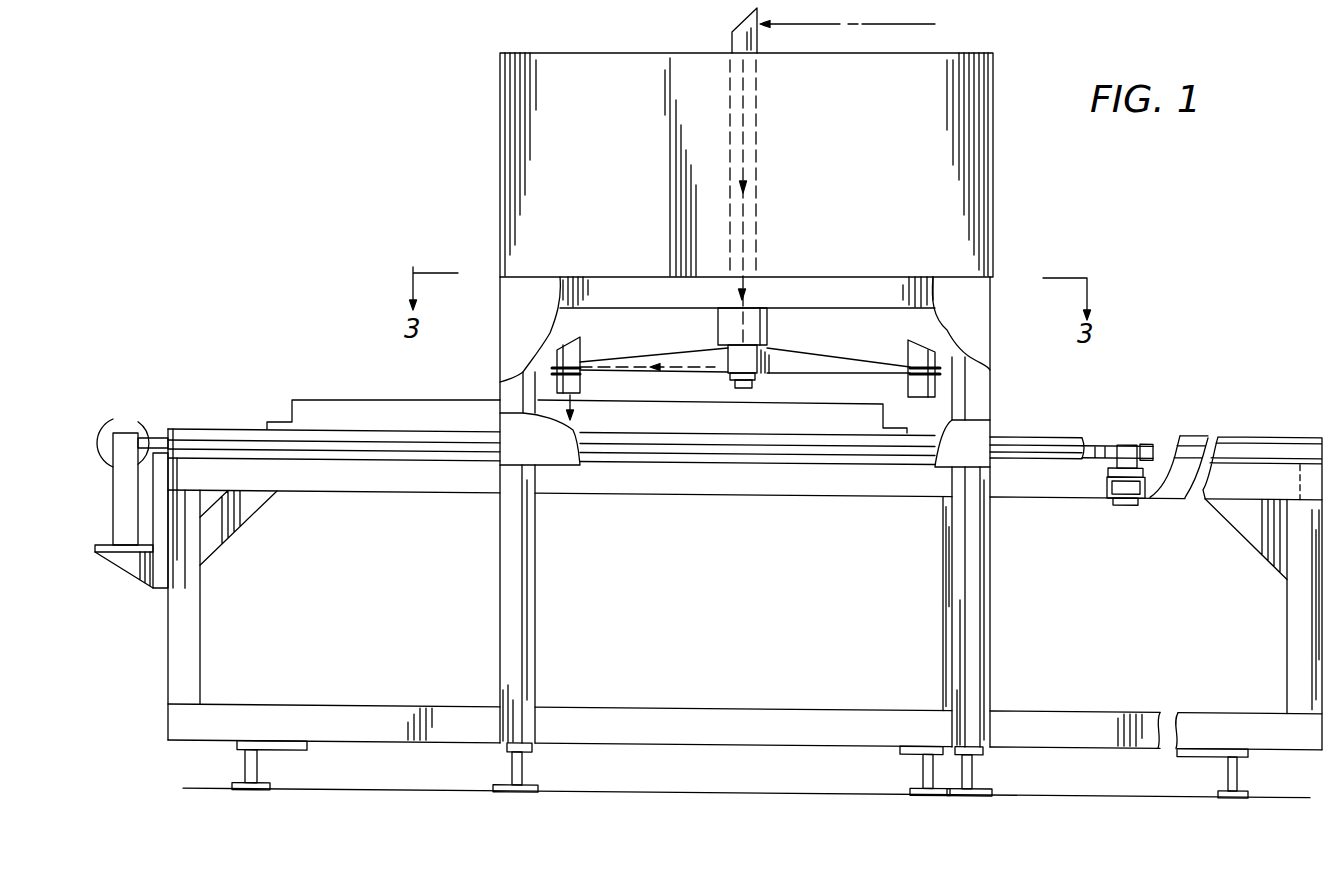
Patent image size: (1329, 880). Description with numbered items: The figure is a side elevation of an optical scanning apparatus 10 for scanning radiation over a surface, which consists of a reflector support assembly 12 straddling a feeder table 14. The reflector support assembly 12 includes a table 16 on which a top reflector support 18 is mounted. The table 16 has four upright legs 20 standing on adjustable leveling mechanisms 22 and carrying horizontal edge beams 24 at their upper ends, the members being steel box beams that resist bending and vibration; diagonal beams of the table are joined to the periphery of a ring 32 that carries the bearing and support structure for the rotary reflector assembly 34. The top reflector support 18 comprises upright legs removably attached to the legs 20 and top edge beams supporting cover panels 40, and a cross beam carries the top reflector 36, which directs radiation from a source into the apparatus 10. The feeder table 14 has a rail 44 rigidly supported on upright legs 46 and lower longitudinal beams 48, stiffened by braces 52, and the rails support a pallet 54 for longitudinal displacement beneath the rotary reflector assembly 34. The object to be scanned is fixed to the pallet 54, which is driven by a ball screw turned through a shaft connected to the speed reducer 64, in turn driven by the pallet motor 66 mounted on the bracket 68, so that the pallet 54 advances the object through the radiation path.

The optical scanning apparatus 10 is at (437, 220).
The reflector support assembly 12 is at (491, 371).
The feeder table 14 is at (202, 641).
The table 16 is at (540, 573).
The top reflector support 18 is at (997, 178).
The upright legs 20 is at (497, 597).
The adjustable leveling mechanisms 22 is at (523, 782).
The horizontal edge beams 24 is at (820, 300).
The ring 32 is at (1247, 530).
The rotary reflector assembly 34 is at (688, 343).
The top reflector 36 is at (732, 20).
The cover panels 40 is at (612, 224).
The rail 44 is at (1052, 437).
The upright legs 46 is at (190, 590).
The lower longitudinal beams 48 is at (692, 716).
The braces 52 is at (242, 512).
The pallet 54 is at (362, 400).
The speed reducer 64 is at (157, 435).
The pallet motor 66 is at (110, 530).
The bracket 68 is at (143, 590).